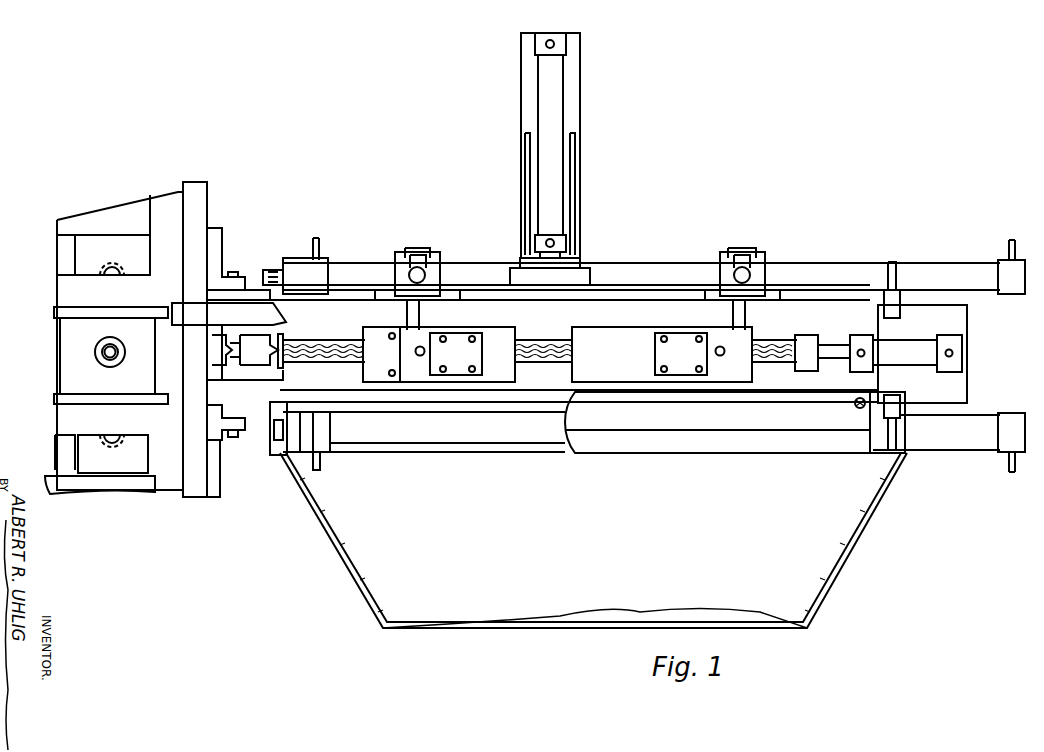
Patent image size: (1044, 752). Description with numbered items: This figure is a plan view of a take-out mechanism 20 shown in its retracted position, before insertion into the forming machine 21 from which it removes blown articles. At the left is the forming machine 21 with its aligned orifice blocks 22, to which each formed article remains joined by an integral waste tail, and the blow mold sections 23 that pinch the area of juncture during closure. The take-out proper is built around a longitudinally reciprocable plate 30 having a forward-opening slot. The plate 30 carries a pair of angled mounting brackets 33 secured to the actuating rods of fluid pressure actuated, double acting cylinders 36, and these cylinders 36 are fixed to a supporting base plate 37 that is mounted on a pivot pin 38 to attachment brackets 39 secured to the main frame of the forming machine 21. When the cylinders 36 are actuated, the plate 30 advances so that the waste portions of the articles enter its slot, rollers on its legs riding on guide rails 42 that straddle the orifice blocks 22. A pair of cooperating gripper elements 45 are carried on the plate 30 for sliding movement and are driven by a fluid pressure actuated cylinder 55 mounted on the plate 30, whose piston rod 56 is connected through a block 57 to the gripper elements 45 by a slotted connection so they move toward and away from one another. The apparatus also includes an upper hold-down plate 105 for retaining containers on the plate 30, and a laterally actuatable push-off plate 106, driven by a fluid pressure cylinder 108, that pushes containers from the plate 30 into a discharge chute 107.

The take-out mechanism 20 is at (257, 280).
The forming machine 21 is at (193, 213).
The orifice blocks 22 is at (93, 353).
The blow mold sections 23 is at (98, 256).
The longitudinally reciprocable plate 30 is at (345, 376).
The angled mounting brackets 33 is at (283, 455).
The double acting cylinders 36 is at (930, 280).
The supporting base plate 37 is at (950, 390).
The pivot pin 38 is at (230, 440).
The attachment brackets 39 is at (213, 488).
The guide rails 42 is at (112, 318).
The gripper elements 45 is at (279, 345).
The fluid pressure actuated cylinder 55 is at (914, 364).
The piston rod 56 is at (838, 348).
The block 57 is at (808, 345).
The upper hold-down plate 105 is at (604, 340).
The push-off plate 106 is at (684, 290).
The discharge chute 107 is at (640, 542).
The fluid pressure cylinder 108 is at (551, 117).